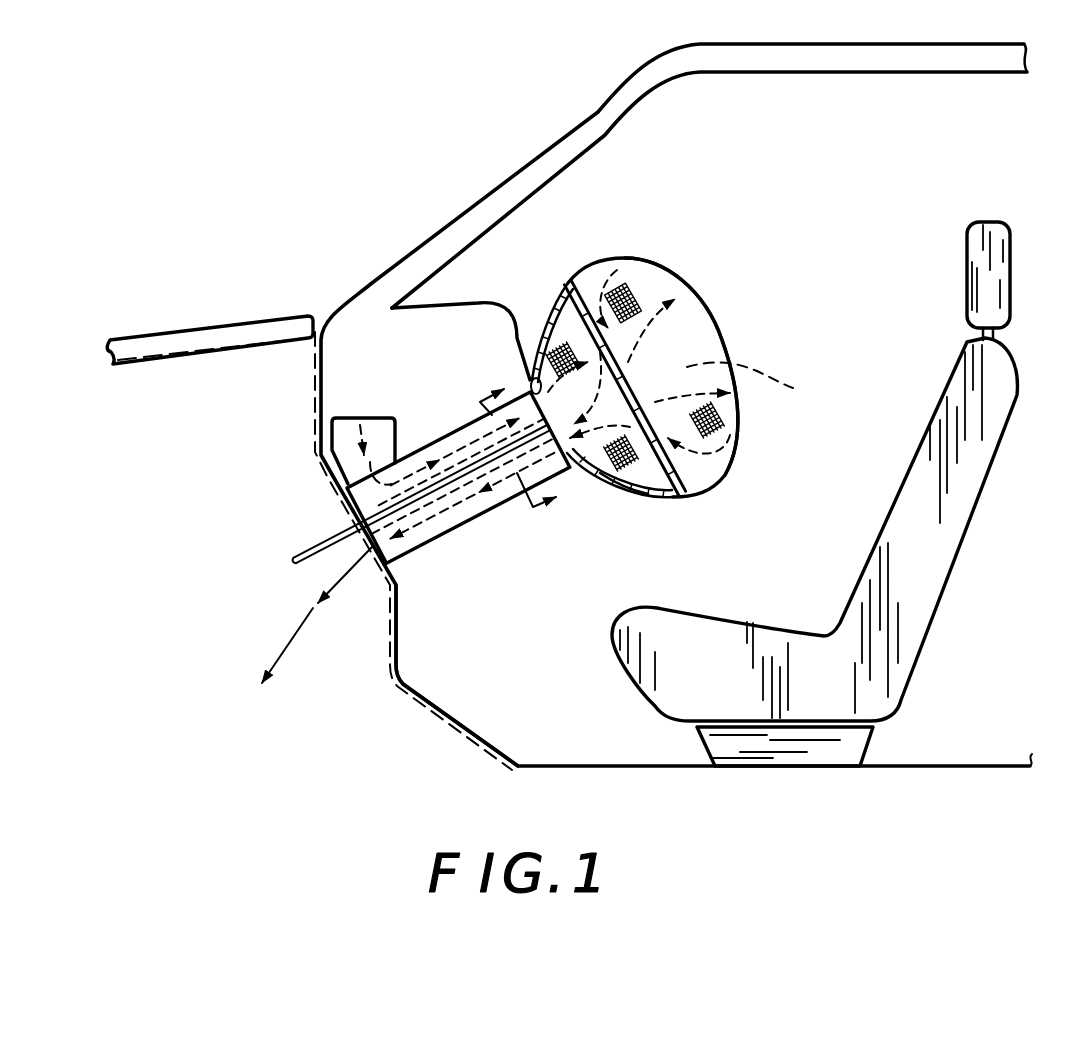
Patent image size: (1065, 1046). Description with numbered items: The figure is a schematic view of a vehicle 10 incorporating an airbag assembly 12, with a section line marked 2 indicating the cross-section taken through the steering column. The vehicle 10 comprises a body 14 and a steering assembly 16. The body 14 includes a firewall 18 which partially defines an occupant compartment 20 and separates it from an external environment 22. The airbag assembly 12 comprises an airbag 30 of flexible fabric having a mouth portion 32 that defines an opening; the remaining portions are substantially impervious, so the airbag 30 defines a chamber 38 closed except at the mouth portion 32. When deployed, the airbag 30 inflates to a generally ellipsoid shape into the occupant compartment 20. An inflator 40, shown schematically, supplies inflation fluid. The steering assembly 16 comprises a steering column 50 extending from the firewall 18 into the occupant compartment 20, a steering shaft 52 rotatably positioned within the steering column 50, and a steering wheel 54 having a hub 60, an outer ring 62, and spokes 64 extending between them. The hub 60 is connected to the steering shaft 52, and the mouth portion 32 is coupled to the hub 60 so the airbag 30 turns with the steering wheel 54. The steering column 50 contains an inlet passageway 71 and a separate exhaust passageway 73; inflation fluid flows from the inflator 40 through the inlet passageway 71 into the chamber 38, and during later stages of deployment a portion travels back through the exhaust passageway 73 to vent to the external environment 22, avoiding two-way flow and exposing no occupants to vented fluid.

The vehicle 10 is at (440, 140).
The airbag assembly 12 is at (672, 409).
The body 14 is at (363, 287).
The steering assembly 16 is at (548, 290).
The firewall 18 is at (392, 606).
The occupant compartment 20 is at (890, 268).
The external environment 22 is at (188, 630).
The airbag 30 is at (715, 330).
The mouth portion 32 is at (528, 378).
The chamber 38 is at (764, 386).
The inflator 40 is at (372, 428).
The steering column 50 is at (413, 548).
The steering shaft 52 is at (298, 548).
The steering wheel 54 is at (685, 500).
The hub 60 is at (590, 478).
The outer ring 62 is at (680, 458).
The spokes 64 is at (627, 493).
The inlet passageway 71 is at (446, 455).
The exhaust passageway 73 is at (430, 532).
The section line 2- 2 is at (527, 443).